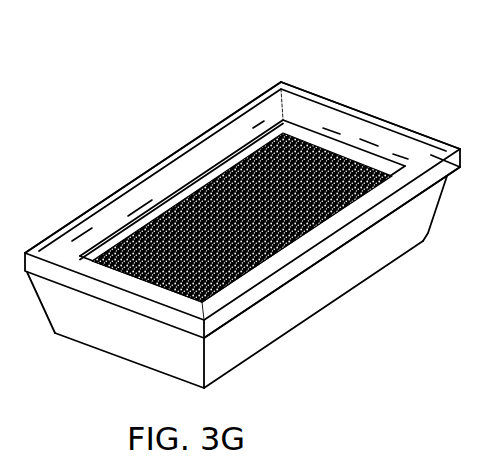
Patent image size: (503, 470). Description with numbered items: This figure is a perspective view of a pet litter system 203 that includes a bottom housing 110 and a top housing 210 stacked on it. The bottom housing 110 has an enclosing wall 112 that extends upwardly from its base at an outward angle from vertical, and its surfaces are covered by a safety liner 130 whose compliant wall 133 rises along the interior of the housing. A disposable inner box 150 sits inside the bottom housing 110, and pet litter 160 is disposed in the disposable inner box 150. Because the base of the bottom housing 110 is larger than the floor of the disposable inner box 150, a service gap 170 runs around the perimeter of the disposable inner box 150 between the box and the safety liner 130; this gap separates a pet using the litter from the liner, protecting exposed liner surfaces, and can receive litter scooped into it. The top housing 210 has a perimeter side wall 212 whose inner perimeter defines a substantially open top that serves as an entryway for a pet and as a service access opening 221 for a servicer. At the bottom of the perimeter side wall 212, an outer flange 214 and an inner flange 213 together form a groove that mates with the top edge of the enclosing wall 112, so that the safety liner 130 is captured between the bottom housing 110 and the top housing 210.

The bottom housing 110 is at (314, 326).
The enclosing wall 112 is at (240, 337).
The safety liner 130 is at (210, 166).
The compliant wall 133 is at (120, 207).
The disposable inner box 150 is at (117, 232).
The pet litter 160 is at (87, 250).
The service gap 170 is at (299, 126).
The pet litter system 203 is at (262, 55).
The top housing 210 is at (249, 102).
The perimeter side wall 212 is at (333, 220).
The inner flange 213 is at (148, 205).
The outer flange 214 is at (300, 267).
The service access opening 221 is at (395, 170).